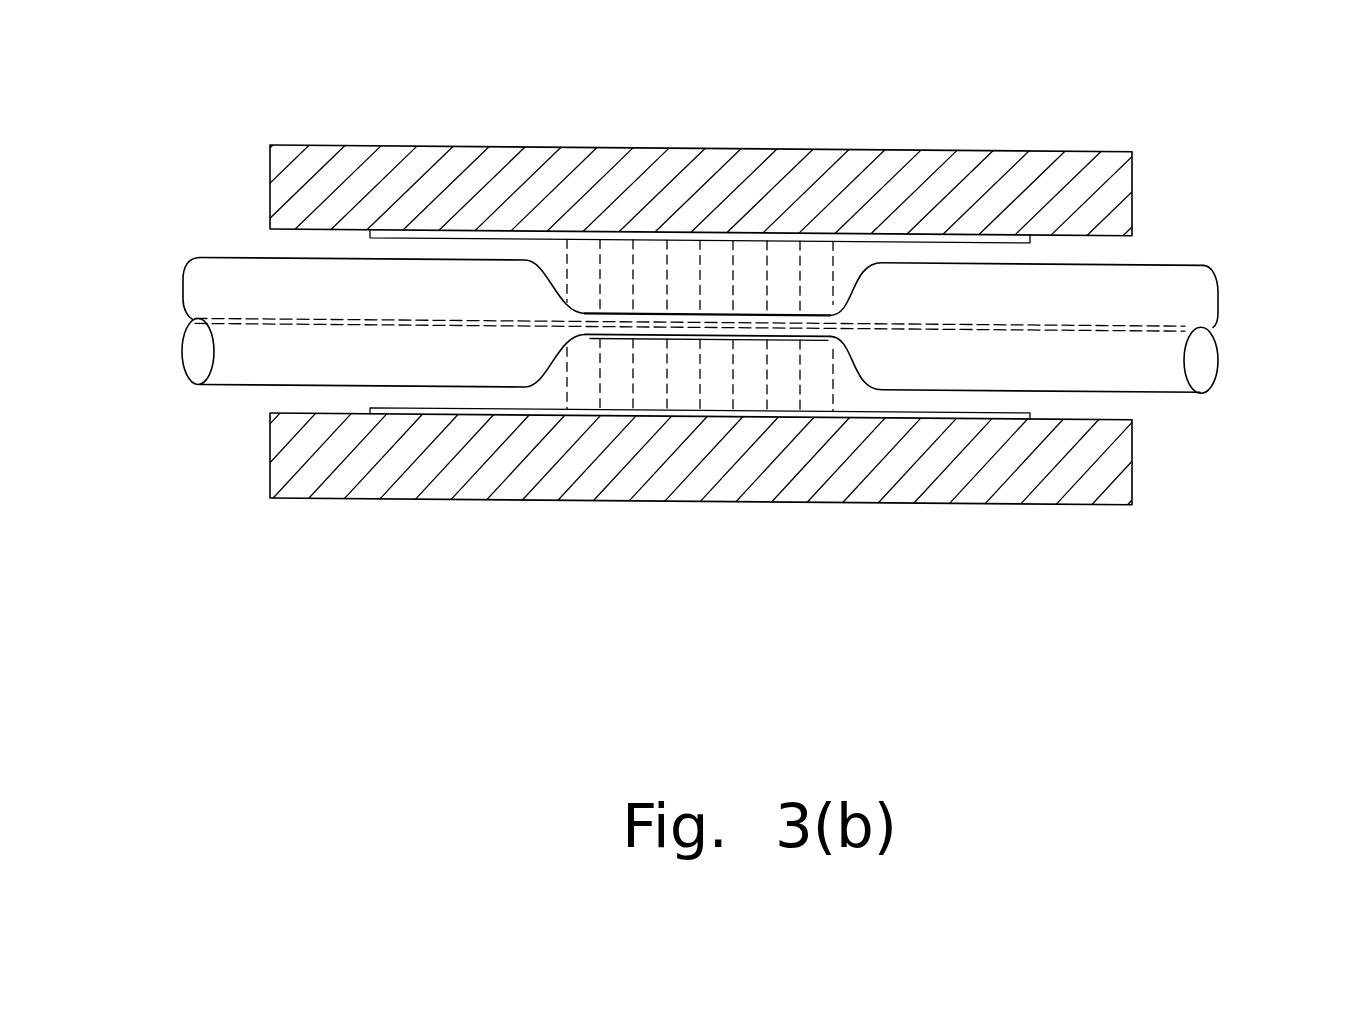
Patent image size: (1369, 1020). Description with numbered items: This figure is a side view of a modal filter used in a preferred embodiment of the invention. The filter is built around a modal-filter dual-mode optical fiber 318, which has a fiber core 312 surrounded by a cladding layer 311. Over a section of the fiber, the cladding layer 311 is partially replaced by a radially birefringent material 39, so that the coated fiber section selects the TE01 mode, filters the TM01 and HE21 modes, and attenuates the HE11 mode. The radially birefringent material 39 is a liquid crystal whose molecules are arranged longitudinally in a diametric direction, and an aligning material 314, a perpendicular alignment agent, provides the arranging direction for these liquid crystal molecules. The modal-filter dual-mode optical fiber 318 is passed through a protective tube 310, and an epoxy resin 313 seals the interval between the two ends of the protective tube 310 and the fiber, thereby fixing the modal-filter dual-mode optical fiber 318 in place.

The radially birefringent material 39 is at (683, 265).
The protective tube 310 is at (973, 173).
The cladding layer 311 is at (1145, 295).
The fiber core 312 is at (1182, 325).
The epoxy resin 313 is at (1110, 407).
The aligning material 314 is at (617, 338).
The modal-filter dual-mode optical fiber 318 is at (183, 270).